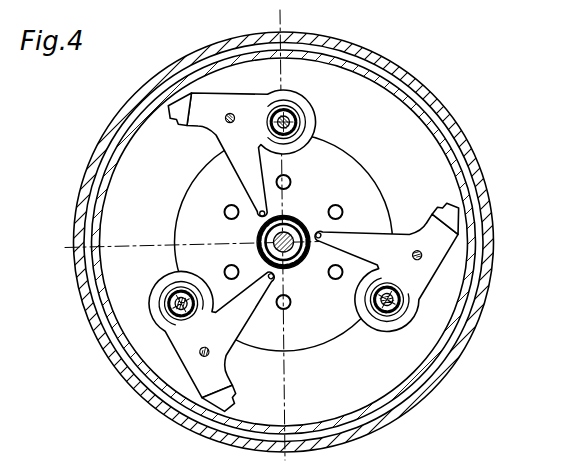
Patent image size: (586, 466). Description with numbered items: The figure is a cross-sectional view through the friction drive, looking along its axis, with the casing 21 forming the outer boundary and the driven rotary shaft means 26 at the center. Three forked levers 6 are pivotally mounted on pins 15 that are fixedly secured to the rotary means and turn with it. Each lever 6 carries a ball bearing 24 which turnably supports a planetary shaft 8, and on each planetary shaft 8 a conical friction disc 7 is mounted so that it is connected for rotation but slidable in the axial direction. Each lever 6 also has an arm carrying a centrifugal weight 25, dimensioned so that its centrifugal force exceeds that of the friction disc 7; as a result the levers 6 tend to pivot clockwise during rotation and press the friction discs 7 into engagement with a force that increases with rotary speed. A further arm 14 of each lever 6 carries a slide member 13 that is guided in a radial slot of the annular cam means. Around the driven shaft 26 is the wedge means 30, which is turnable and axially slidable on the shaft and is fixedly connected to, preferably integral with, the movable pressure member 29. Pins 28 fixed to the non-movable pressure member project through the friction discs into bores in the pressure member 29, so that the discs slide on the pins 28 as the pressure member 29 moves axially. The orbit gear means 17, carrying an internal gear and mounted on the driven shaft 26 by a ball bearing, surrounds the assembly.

The forked lever 6 is at (218, 115).
The conical friction disc 7 is at (393, 323).
The planetary shaft 8 is at (406, 305).
The slide member 13 is at (272, 275).
The arm 14 is at (248, 171).
The pin 15 is at (423, 256).
The orbit gear means 17 is at (109, 360).
The casing 21 is at (133, 394).
The ball bearing 24 is at (405, 298).
The centrifugal weight 25 is at (172, 106).
The driven rotary shaft means 26 is at (256, 248).
The pin 28 is at (343, 210).
The movable pressure member 29 is at (331, 175).
The wedge means 30 is at (258, 230).